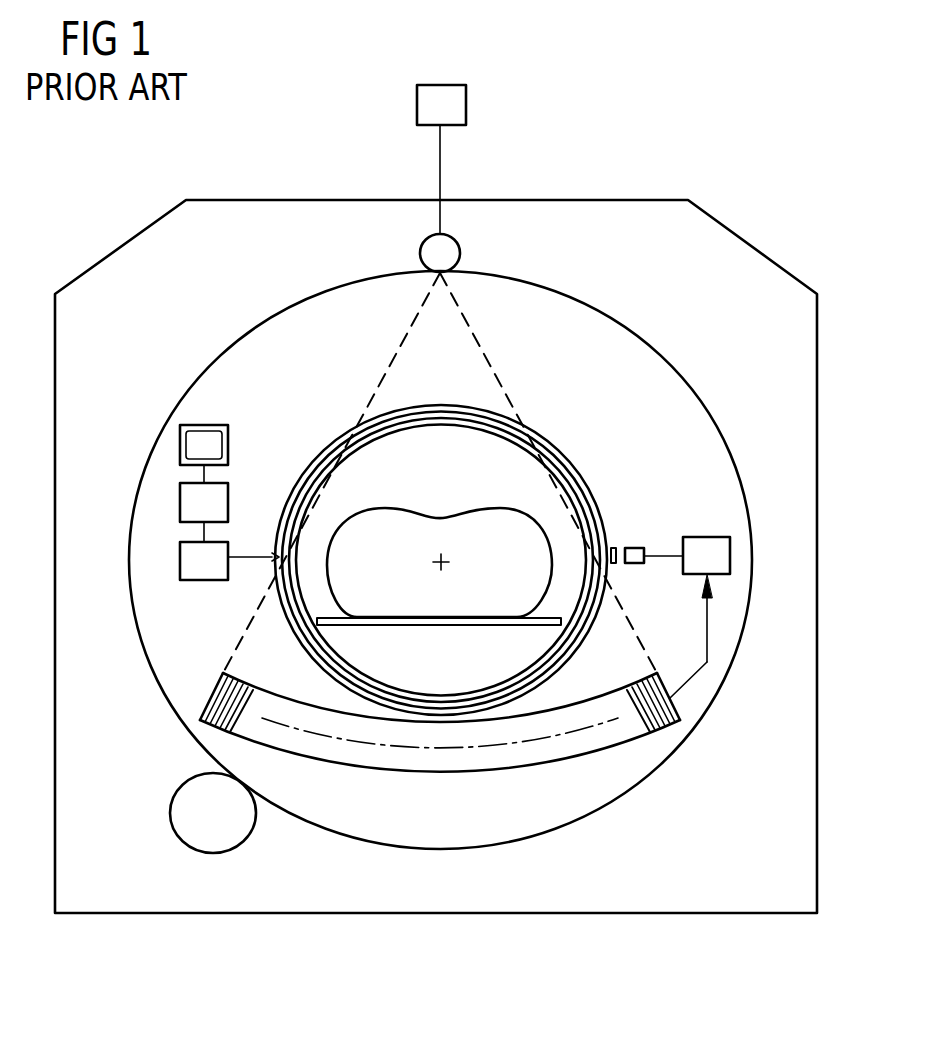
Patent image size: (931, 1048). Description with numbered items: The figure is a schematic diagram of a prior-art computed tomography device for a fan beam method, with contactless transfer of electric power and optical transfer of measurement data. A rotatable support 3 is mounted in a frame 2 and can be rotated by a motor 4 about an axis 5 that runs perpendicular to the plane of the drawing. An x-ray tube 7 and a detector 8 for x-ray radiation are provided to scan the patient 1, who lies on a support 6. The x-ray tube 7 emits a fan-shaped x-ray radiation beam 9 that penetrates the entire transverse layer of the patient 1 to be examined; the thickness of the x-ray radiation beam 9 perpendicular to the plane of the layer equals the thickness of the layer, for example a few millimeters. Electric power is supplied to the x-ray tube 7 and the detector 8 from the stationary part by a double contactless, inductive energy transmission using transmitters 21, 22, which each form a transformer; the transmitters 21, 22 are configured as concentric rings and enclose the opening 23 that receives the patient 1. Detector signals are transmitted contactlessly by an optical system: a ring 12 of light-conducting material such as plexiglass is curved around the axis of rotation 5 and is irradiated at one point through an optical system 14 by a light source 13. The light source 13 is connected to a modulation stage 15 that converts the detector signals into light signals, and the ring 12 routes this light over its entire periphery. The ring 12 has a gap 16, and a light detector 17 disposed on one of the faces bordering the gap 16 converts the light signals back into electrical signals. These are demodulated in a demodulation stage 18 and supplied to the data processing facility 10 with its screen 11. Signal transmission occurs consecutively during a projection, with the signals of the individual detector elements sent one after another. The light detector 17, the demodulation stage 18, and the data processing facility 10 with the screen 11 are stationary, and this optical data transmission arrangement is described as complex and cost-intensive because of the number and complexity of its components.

The patient 1 is at (455, 514).
The frame 2 is at (622, 200).
The rotatable support 3 is at (370, 846).
The motor 4 is at (170, 812).
The axis 5 is at (450, 560).
The support 6 is at (450, 628).
The x-ray tube 7 is at (462, 253).
The detector 8 is at (447, 780).
The x-ray radiation beam 9 is at (497, 375).
The data processing facility 10 is at (232, 493).
The screen 11 is at (222, 425).
The ring 12 is at (553, 444).
The light source 13 is at (636, 546).
The optical system 14 is at (614, 546).
The modulation stage 15 is at (700, 536).
The gap 16 is at (275, 564).
The light detector 17 is at (273, 555).
The demodulation stage 18 is at (202, 582).
The transmitter 21 is at (430, 414).
The transmitter 22 is at (397, 433).
The opening 23 is at (450, 438).